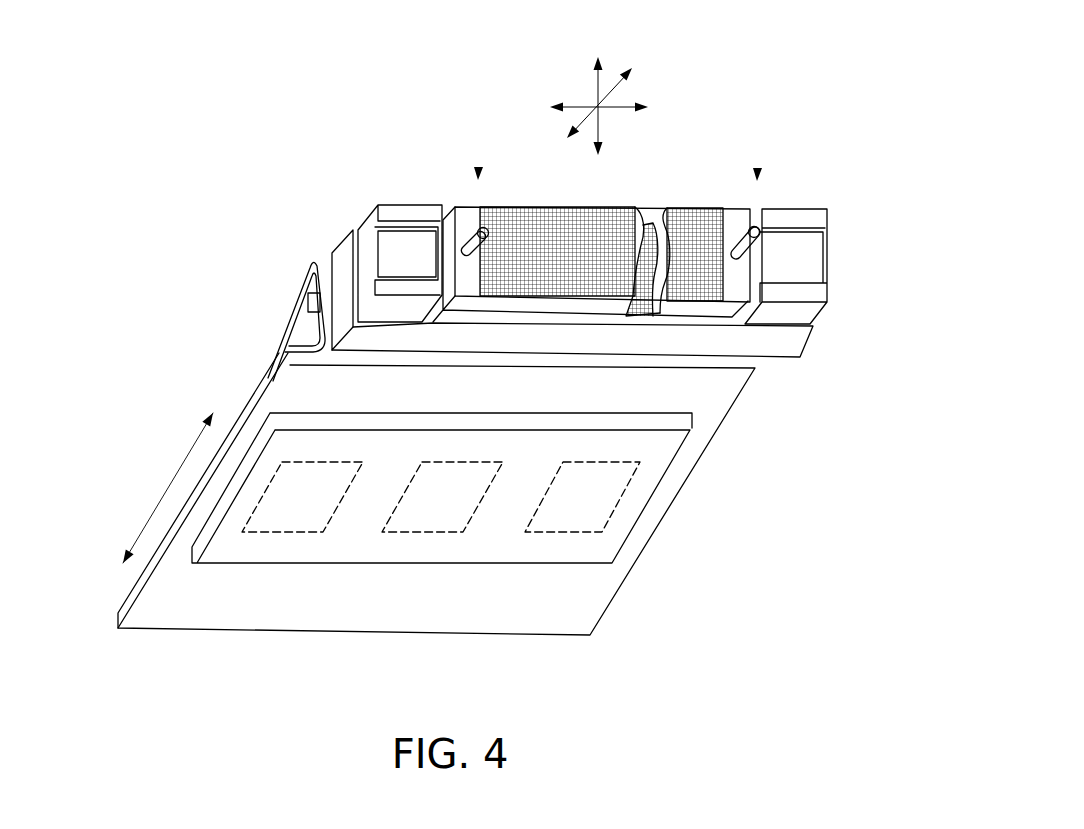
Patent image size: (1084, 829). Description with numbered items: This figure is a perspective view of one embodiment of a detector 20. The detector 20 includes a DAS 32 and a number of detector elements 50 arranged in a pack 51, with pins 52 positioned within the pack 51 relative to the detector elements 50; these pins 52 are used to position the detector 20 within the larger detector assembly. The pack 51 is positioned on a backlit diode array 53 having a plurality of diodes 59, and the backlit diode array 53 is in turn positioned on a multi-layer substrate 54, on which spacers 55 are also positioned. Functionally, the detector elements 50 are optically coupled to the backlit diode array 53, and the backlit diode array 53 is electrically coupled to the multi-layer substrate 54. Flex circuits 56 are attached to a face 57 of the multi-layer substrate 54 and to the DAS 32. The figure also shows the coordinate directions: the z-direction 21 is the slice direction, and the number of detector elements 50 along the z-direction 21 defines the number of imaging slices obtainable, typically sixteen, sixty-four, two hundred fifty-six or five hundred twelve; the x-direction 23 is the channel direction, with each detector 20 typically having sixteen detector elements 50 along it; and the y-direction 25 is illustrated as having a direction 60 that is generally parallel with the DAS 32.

The detector 20 is at (758, 168).
The z-direction 21 is at (627, 100).
The x-direction 23 is at (598, 126).
The y-direction 25 is at (616, 92).
The DAS 32 is at (668, 487).
The detector elements 50 is at (557, 206).
The pack 51 is at (479, 166).
The pins 52 is at (470, 225).
The backlit diode array 53 is at (725, 325).
The multi-layer substrate 54 is at (797, 345).
The spacers 55 is at (407, 204).
The flex circuits 56 is at (290, 307).
The face 57 is at (333, 253).
The diodes 59 is at (652, 222).
The direction 60 is at (165, 485).